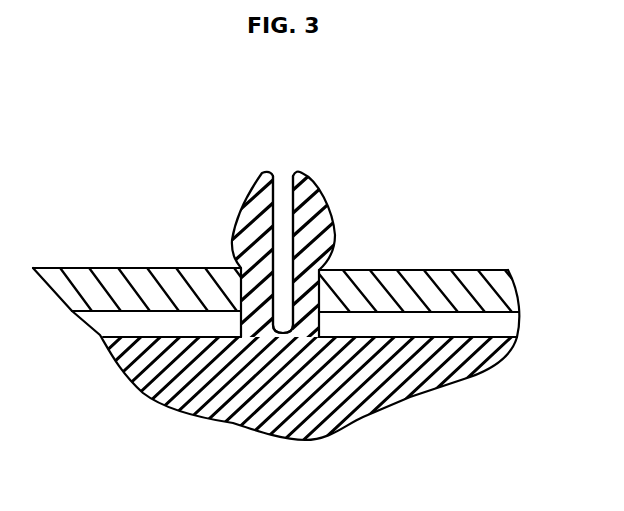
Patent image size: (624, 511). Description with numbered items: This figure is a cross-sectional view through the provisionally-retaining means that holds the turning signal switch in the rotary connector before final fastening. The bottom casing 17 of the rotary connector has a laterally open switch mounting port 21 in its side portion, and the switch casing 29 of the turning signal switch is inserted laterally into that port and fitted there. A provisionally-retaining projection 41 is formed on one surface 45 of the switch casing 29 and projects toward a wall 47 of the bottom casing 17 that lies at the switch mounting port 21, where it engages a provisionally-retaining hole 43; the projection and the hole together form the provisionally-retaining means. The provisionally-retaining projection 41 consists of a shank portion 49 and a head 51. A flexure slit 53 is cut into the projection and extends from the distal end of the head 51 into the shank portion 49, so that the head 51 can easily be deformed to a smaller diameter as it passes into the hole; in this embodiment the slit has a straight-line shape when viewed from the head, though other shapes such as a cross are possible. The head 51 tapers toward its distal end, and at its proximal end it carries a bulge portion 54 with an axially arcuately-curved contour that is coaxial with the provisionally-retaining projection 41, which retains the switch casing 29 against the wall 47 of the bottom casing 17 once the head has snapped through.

The bottom casing 17 is at (137, 266).
The switch mounting port 21 is at (124, 318).
The switch casing 29 is at (472, 378).
The provisionally-retaining projection 41 is at (293, 286).
The provisionally-retaining hole 43 is at (295, 333).
The surface 45 is at (466, 334).
The wall 47 is at (407, 293).
The shank portion 49 is at (238, 326).
The head 51 is at (262, 178).
The flexure slit 53 is at (278, 185).
The bulge portion 54 is at (337, 252).